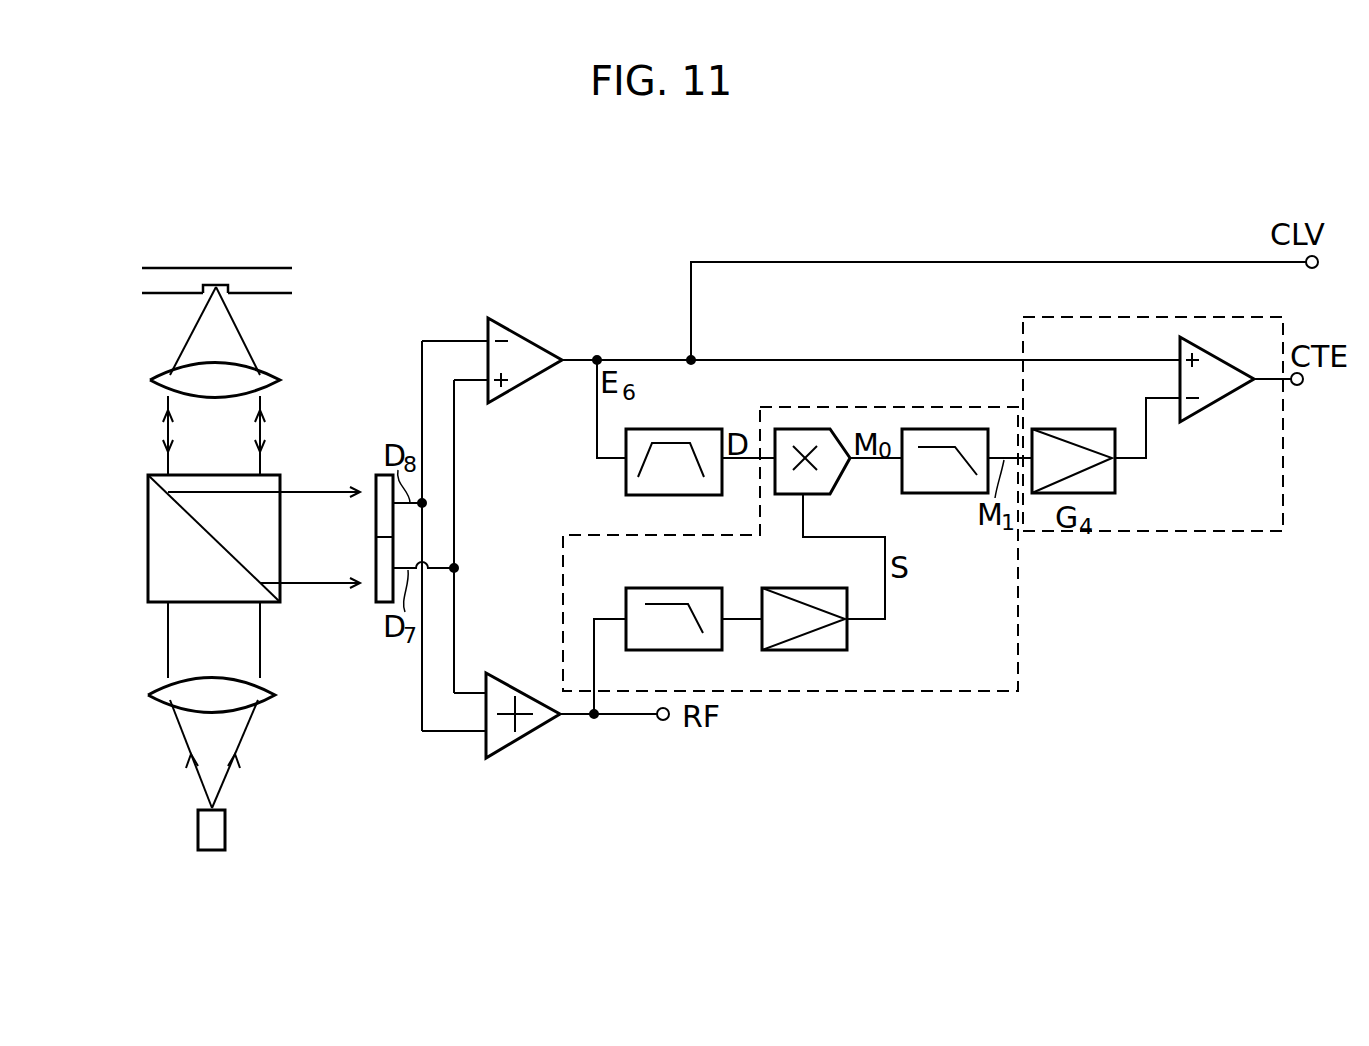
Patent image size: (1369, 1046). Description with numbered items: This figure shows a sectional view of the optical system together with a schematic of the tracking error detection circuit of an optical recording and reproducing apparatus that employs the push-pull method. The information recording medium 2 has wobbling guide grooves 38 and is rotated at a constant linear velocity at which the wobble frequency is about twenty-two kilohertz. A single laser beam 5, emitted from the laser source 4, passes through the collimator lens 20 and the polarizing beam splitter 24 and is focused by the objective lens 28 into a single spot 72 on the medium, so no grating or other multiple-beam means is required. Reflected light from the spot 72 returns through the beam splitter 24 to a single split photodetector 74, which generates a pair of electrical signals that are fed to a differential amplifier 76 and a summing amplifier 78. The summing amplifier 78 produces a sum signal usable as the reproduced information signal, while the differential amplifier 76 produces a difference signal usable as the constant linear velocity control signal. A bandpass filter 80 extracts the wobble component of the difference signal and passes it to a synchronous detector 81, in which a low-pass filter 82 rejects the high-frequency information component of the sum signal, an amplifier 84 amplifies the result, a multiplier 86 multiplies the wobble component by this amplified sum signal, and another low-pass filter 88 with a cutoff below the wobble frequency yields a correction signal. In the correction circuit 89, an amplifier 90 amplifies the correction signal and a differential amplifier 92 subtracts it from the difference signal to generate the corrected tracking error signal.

The information recording medium 2 is at (282, 281).
The wobbling guide grooves 38 is at (212, 283).
The spot 72 is at (222, 284).
The objective lens 28 is at (162, 377).
The polarizing beam splitter 24 is at (160, 538).
The collimator lens 20 is at (163, 690).
The laser beam 5 is at (178, 730).
The semiconductor laser 4 is at (205, 825).
The split photodetector 74 is at (378, 602).
The differential amplifier 76 is at (518, 332).
The summing amplifier 78 is at (532, 735).
The bandpass filter 80 is at (627, 495).
The low-pass filter 82 is at (672, 588).
The amplifier 84 is at (849, 645).
The multiplier 86 is at (797, 429).
The low-pass filter 88 is at (937, 429).
The amplifier 90 is at (1060, 429).
The differential amplifier 92 is at (1205, 409).
The synchronous detector 81 is at (1018, 673).
The correction circuit 89 is at (1185, 531).